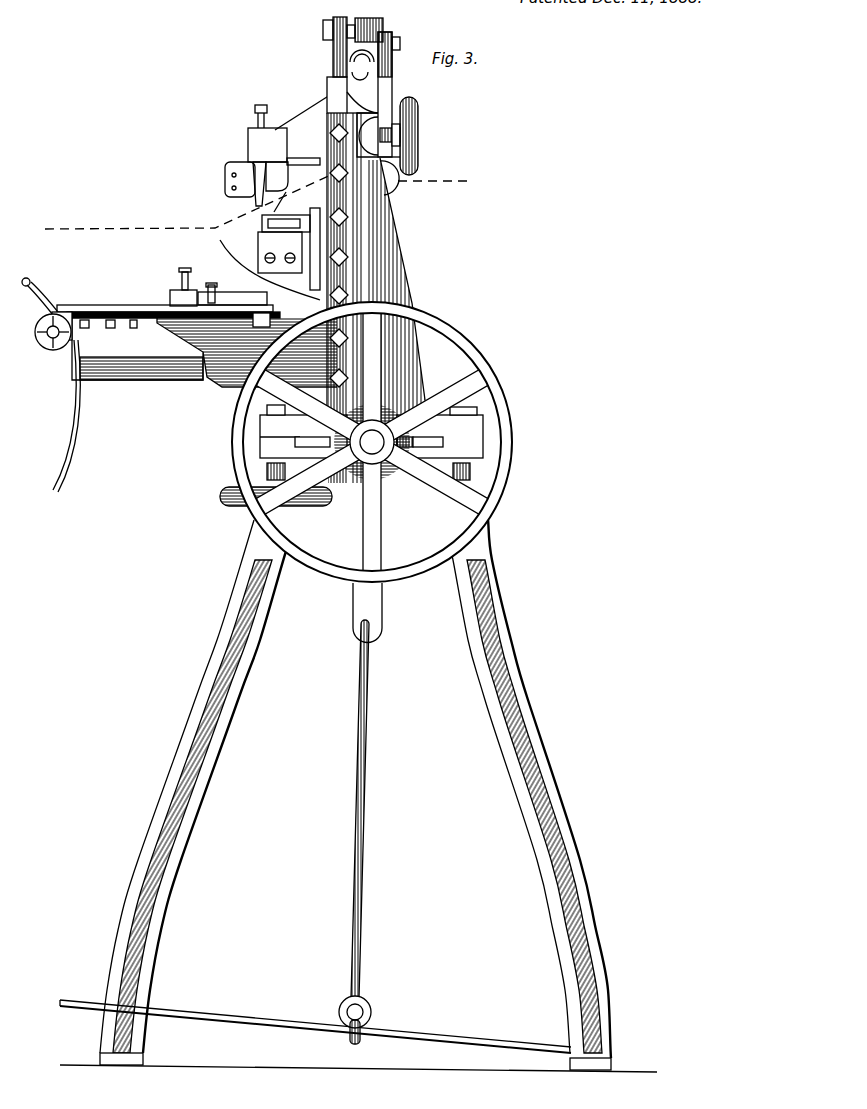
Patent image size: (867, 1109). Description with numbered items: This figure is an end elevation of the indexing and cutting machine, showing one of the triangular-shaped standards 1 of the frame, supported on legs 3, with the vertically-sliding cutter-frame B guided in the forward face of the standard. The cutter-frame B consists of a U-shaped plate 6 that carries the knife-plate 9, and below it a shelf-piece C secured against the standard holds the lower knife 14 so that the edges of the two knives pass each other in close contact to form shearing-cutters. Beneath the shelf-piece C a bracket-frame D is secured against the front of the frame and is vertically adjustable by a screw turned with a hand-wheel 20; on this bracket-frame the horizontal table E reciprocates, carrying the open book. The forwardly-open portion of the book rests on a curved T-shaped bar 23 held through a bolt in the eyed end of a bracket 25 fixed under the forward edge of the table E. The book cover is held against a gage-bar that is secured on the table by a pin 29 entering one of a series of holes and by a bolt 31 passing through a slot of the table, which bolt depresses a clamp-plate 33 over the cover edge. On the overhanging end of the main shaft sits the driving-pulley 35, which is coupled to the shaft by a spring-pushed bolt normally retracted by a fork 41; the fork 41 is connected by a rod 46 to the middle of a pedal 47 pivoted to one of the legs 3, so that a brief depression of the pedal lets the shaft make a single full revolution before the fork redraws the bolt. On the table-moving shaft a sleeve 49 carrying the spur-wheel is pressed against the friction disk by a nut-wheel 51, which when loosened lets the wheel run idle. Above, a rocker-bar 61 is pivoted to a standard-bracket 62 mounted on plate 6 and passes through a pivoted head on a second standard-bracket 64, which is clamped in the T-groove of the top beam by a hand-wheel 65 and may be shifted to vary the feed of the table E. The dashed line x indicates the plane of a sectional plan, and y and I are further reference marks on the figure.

The standard 1 is at (392, 227).
The leg 3 is at (208, 762).
The U-shaped plate 6 is at (352, 117).
The knife-plate 9 is at (260, 163).
The lower knife 14 is at (240, 232).
The hand-wheel 20 is at (222, 494).
The T-shaped bar 23 is at (45, 302).
The bracket 25 is at (40, 348).
The pin 29 is at (214, 298).
The bolt 31 is at (184, 285).
The clamp-plate 33 is at (172, 299).
The driving-pulley 35 is at (500, 428).
The fork 41 is at (388, 529).
The rod 46 is at (361, 680).
The pedal 47 is at (285, 1023).
The sleeve 49 is at (152, 380).
The nut-wheel 51 is at (71, 395).
The rocker-bar 61 is at (380, 31).
The standard-bracket 62 is at (334, 57).
The standard-bracket 64 is at (391, 81).
The hand-wheel 65 is at (418, 137).
The cutter-frame B is at (289, 130).
The shelf-piece C is at (270, 254).
The bracket-frame D is at (204, 350).
The table E is at (107, 311).
The guide block I is at (222, 180).
The section line x is at (254, 205).
The reference point y is at (298, 125).